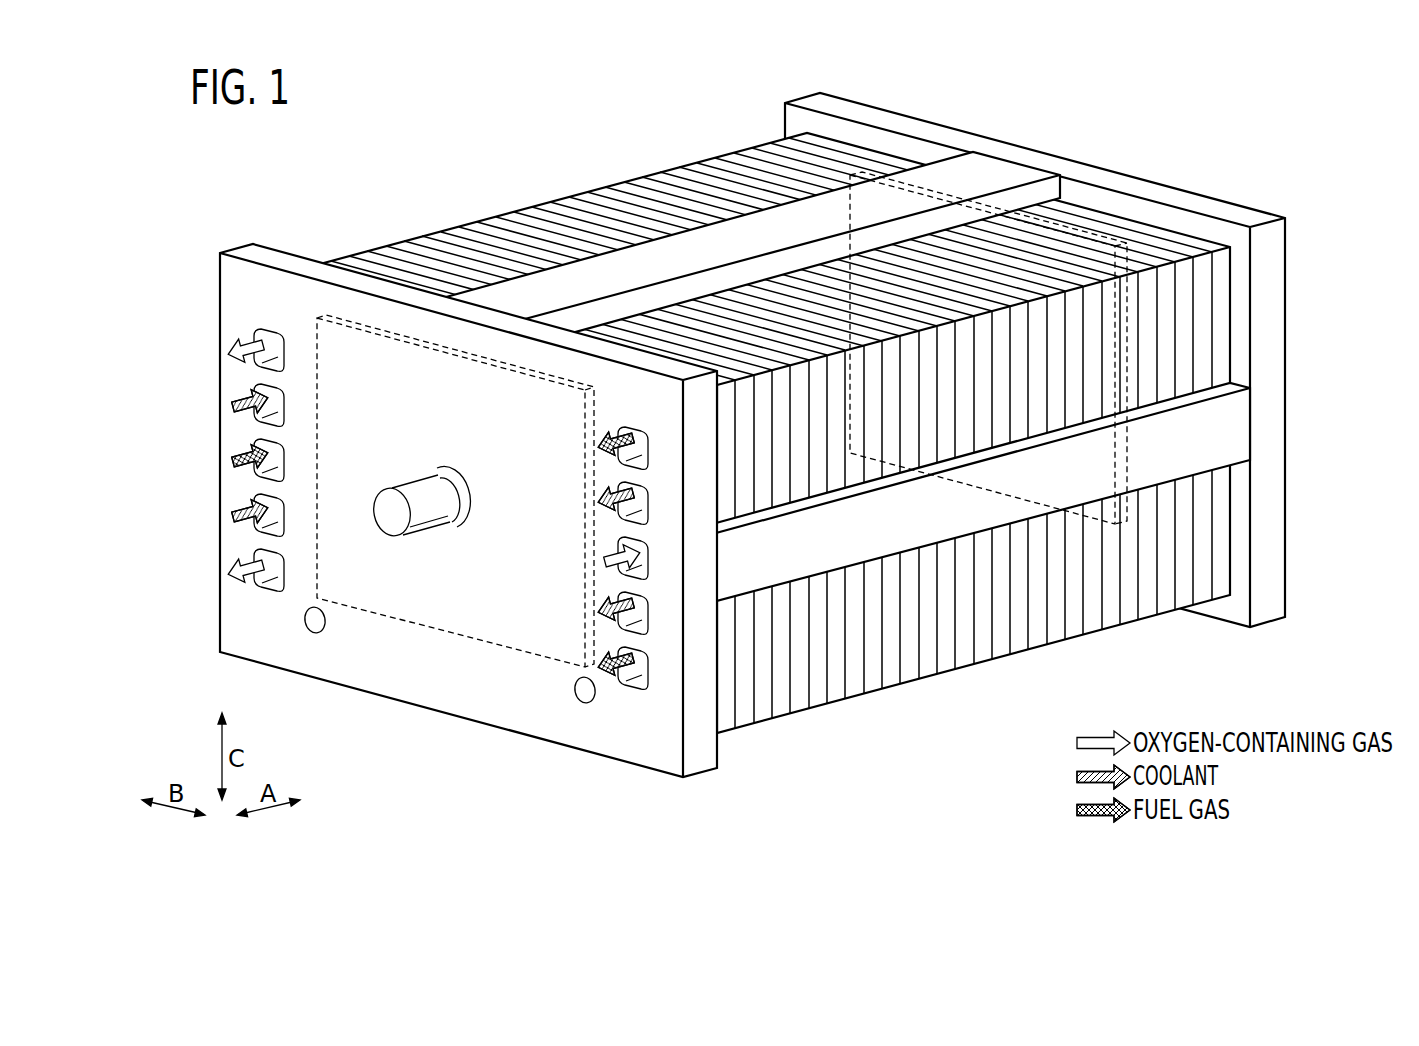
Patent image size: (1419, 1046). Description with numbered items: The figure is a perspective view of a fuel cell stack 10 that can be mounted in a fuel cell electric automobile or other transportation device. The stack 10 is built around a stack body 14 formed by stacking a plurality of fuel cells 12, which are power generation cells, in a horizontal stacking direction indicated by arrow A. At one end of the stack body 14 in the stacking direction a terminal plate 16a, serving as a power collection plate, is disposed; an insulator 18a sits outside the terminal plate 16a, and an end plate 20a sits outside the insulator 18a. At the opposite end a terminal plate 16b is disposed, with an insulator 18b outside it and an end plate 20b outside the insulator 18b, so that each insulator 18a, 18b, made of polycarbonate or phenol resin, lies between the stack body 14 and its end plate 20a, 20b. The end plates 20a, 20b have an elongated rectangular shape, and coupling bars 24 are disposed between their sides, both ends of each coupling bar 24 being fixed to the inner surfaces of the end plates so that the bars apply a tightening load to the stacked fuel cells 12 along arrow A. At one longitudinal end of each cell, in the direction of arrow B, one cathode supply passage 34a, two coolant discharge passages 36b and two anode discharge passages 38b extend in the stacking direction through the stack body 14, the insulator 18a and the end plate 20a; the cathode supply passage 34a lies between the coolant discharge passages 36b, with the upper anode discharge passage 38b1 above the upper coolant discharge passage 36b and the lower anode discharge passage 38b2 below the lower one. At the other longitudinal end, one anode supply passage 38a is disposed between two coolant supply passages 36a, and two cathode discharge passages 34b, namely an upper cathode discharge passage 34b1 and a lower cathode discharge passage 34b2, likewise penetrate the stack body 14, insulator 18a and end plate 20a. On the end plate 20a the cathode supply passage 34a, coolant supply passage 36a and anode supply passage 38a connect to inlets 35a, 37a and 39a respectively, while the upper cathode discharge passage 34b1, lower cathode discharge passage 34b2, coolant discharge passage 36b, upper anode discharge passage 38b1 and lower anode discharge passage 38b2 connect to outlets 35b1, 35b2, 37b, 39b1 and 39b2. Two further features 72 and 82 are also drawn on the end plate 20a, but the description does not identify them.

The fuel cell stack 10 is at (301, 175).
The fuel cell 12 is at (563, 203).
The stack body 14 is at (762, 422).
The terminal plate 16a is at (521, 655).
The terminal plate 16b is at (1128, 350).
The insulator 18a is at (728, 710).
The insulator 18b is at (1226, 567).
The end plate 20a is at (440, 695).
The end plate 20b is at (1289, 257).
The coupling bar 24 is at (1005, 173).
The cathode supply passage 34a is at (613, 545).
The cathode discharge passage 34b is at (345, 466).
The upper cathode discharge passage 34b1 is at (278, 347).
The lower cathode discharge passage 34b2 is at (278, 582).
The inlet 35a is at (642, 572).
The outlet 35b1 is at (262, 340).
The outlet 35b2 is at (258, 555).
The coolant supply passage 36a is at (325, 471).
The coolant discharge passage 36b is at (559, 545).
The inlet 37a is at (277, 405).
The outlet 37b is at (613, 490).
The anode supply passage 38a is at (277, 453).
The anode discharge passage 38b is at (553, 543).
The upper anode discharge passage 38b1 is at (613, 435).
The lower anode discharge passage 38b2 is at (613, 650).
The inlet 39a is at (258, 442).
The outlet 39b1 is at (640, 437).
The outlet 39b2 is at (636, 683).
The hole 72 is at (310, 633).
The hole 82 is at (577, 703).